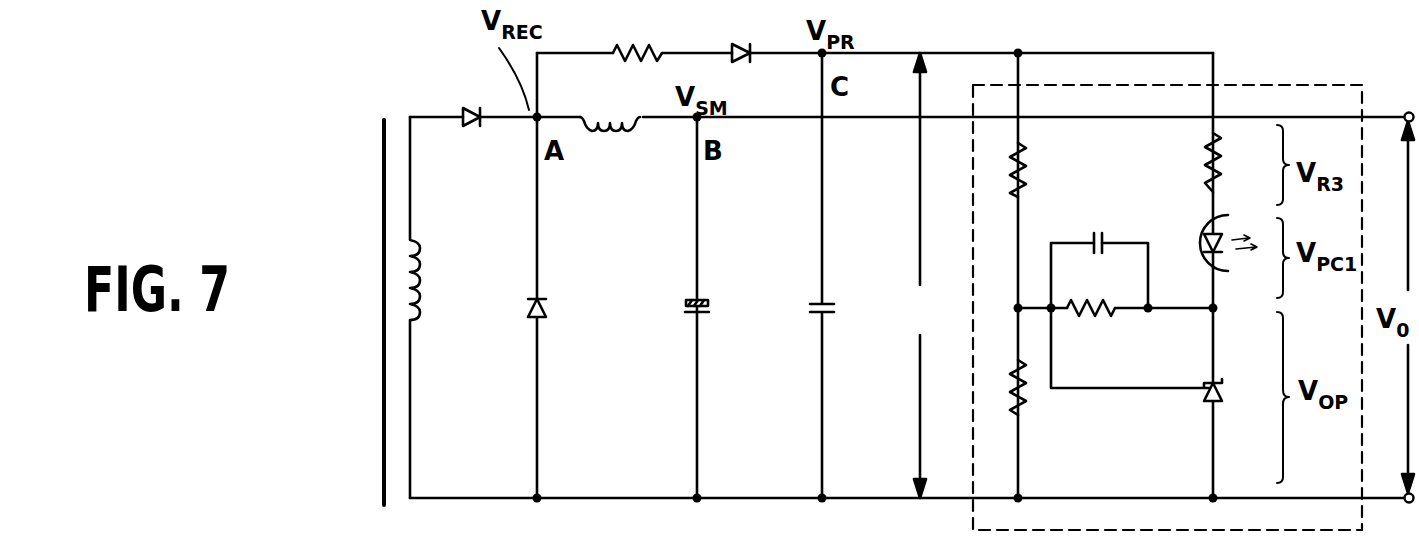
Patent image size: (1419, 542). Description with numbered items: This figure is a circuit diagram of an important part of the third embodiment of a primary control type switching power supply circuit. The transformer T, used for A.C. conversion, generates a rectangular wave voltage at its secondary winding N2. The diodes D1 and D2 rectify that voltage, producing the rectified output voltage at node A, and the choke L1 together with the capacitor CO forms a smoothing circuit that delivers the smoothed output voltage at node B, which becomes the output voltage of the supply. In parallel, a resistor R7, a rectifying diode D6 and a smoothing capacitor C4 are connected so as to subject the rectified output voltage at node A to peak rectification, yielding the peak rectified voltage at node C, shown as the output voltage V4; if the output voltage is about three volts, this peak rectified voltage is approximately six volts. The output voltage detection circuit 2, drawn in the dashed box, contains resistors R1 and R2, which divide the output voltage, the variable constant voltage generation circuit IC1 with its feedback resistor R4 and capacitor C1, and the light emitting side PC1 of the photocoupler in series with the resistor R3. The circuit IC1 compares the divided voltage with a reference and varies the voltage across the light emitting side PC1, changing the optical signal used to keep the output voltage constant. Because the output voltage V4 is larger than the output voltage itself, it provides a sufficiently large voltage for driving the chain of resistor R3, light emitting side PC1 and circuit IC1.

The output voltage detection circuit 2 is at (1133, 312).
The transformer T is at (381, 288).
The secondary winding N2 is at (441, 307).
The diode D1 is at (466, 101).
The choke L1 is at (610, 107).
The resistor R7 is at (631, 38).
The rectifying diode D6 is at (752, 39).
The diode D2 is at (562, 314).
The capacitor CO is at (721, 315).
The smoothing capacitor C4 is at (843, 315).
The output voltage V4 is at (924, 275).
The resistor R1 is at (1001, 170).
The resistor R2 is at (1001, 407).
The resistor R3 is at (1233, 162).
The resistor R4 is at (1091, 329).
The capacitor C1 is at (1099, 253).
The variable constant voltage generation circuit IC1 is at (1164, 359).
The light emitting side of the photocoupler PC1 is at (1237, 260).